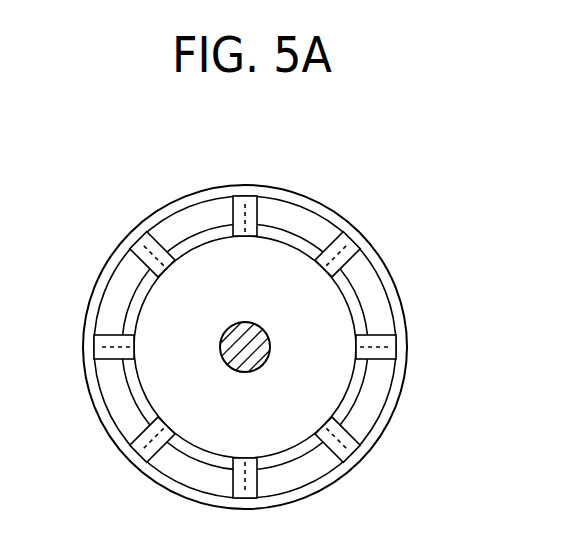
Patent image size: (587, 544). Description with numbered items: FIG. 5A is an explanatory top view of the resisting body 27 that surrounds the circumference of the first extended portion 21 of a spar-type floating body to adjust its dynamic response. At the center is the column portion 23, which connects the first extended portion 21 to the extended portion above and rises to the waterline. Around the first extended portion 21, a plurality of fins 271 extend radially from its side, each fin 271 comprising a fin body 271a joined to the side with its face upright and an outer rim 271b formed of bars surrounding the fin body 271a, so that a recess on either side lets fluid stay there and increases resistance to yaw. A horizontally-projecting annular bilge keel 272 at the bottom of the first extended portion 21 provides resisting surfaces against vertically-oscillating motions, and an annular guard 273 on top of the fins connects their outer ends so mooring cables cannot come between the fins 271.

The resisting body 27 is at (246, 329).
The fin 271 is at (273, 347).
The fin body 271a is at (378, 332).
The outer rim 271b is at (386, 336).
The annular bilge keel 272 is at (131, 302).
The annular guard 273 is at (247, 185).
The first extended portion 21 is at (259, 297).
The column portion 23 is at (219, 347).